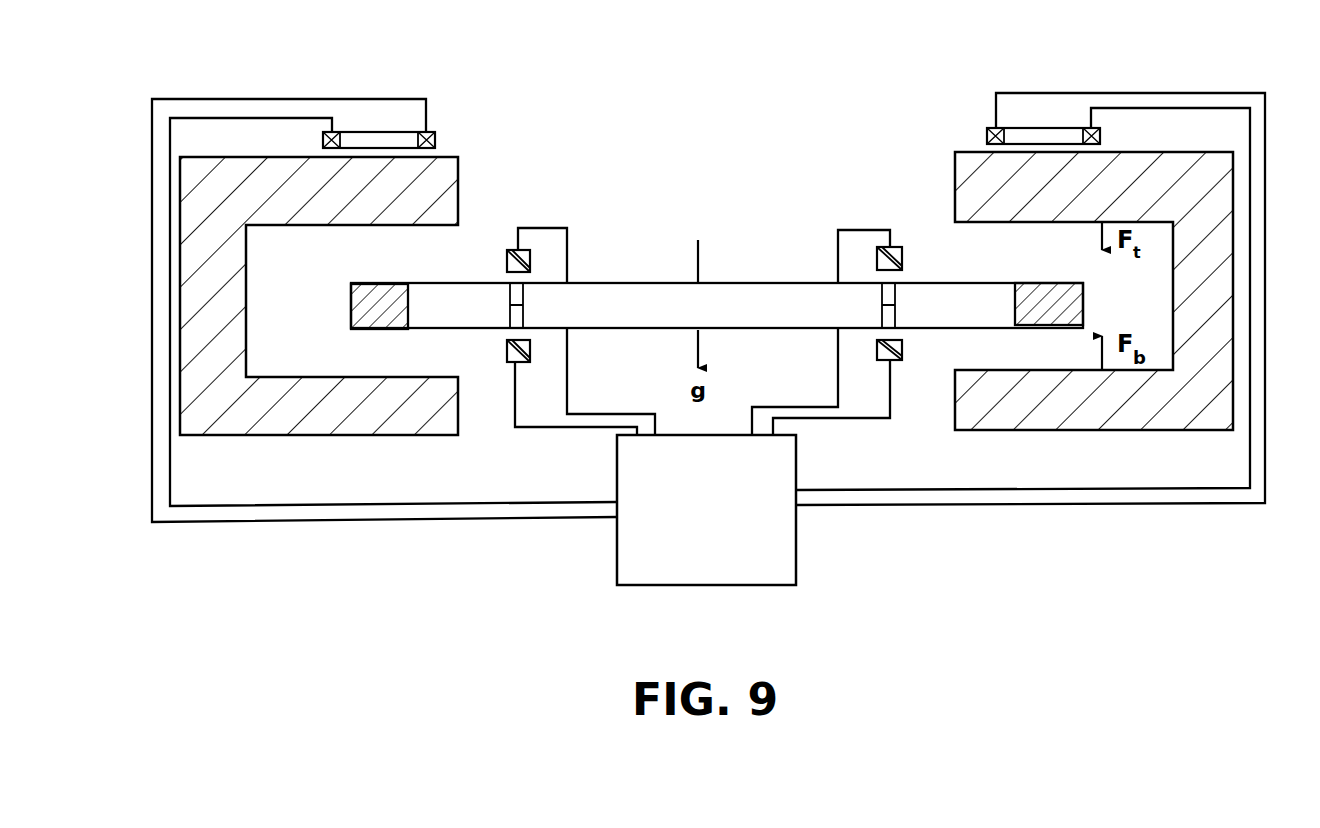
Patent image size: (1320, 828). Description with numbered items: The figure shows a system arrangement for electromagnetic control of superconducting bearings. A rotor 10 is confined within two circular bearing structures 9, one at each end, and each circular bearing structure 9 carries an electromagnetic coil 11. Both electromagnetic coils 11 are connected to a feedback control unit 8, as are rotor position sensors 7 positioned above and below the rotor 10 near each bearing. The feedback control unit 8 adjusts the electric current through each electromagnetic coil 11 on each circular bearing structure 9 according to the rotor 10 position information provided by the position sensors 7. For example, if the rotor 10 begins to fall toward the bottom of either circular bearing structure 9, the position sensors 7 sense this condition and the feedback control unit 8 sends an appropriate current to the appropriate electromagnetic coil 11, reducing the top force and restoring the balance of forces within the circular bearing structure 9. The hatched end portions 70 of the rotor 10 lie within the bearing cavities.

The rotor position sensor 7 is at (507, 255).
The feedback control unit 8 is at (692, 577).
The circular bearing structure 9 is at (309, 435).
The rotor 10 is at (750, 283).
The electromagnetic coil 11 is at (428, 132).
The masses 70 is at (351, 288).